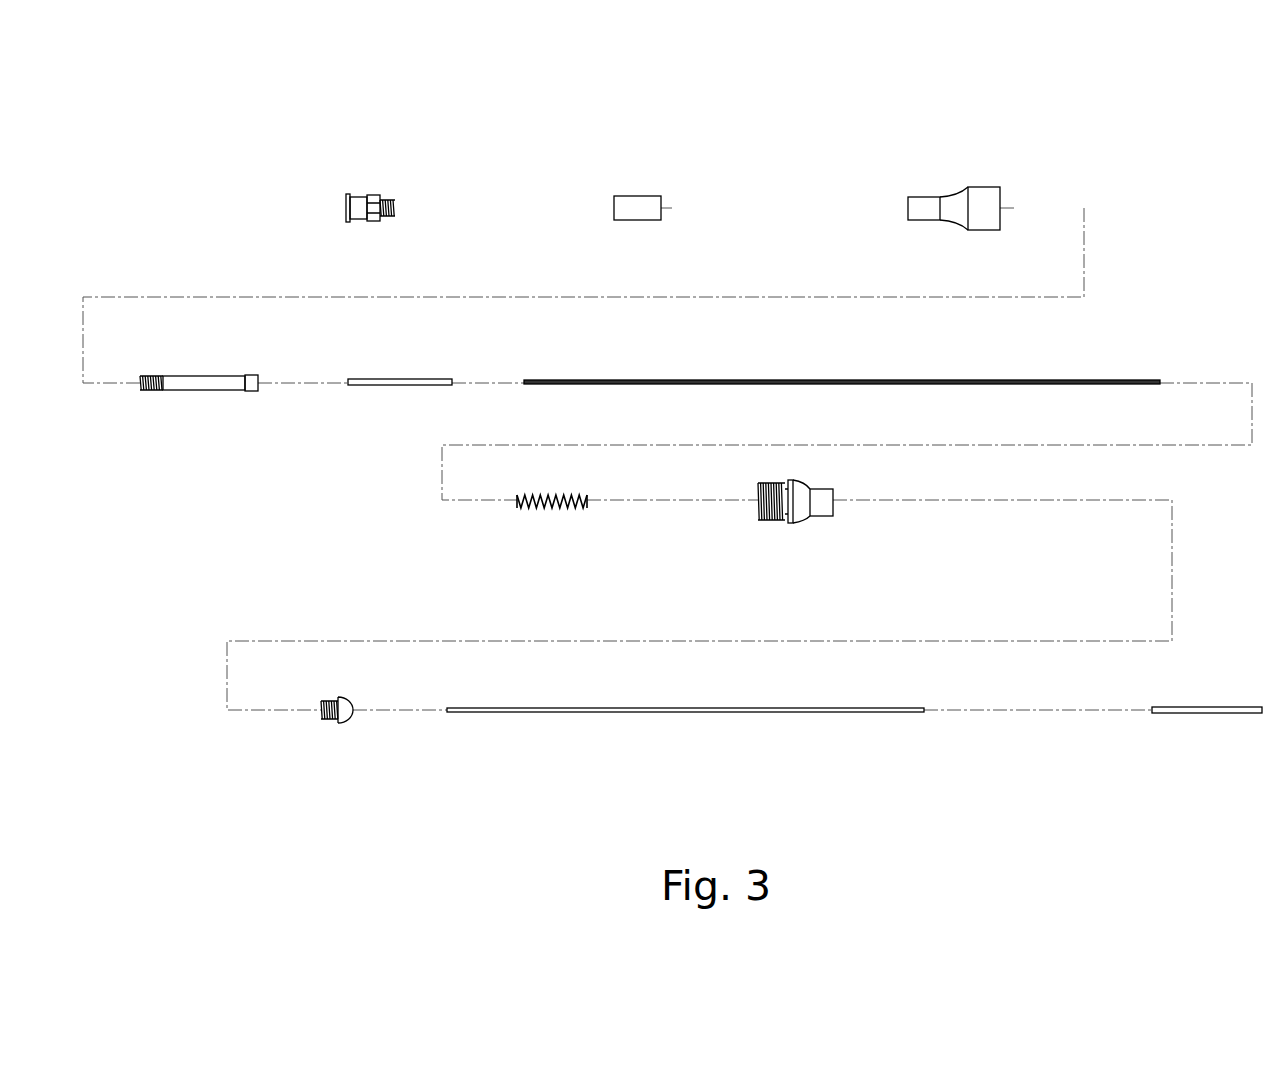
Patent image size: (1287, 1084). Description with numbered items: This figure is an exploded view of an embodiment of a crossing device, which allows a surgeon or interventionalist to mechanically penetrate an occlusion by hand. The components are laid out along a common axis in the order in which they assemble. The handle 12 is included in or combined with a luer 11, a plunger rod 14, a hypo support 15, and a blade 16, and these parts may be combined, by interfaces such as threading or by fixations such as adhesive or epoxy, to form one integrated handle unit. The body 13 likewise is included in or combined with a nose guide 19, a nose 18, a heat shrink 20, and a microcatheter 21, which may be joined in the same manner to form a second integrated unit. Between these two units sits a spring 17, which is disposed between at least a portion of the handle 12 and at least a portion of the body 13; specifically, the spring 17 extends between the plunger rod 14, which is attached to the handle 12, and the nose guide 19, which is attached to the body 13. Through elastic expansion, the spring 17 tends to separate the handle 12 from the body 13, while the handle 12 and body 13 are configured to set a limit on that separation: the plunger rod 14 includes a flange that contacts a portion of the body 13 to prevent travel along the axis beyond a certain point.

The luer 11 is at (366, 186).
The handle 12 is at (645, 187).
The body 13 is at (970, 182).
The plunger rod 14 is at (215, 375).
The hypo support 15 is at (413, 374).
The blade 16 is at (722, 373).
The spring 17 is at (563, 519).
The nose 18 is at (347, 726).
The nose guide 19 is at (818, 527).
The heat shrink 20 is at (1180, 722).
The microcatheter 21 is at (660, 716).